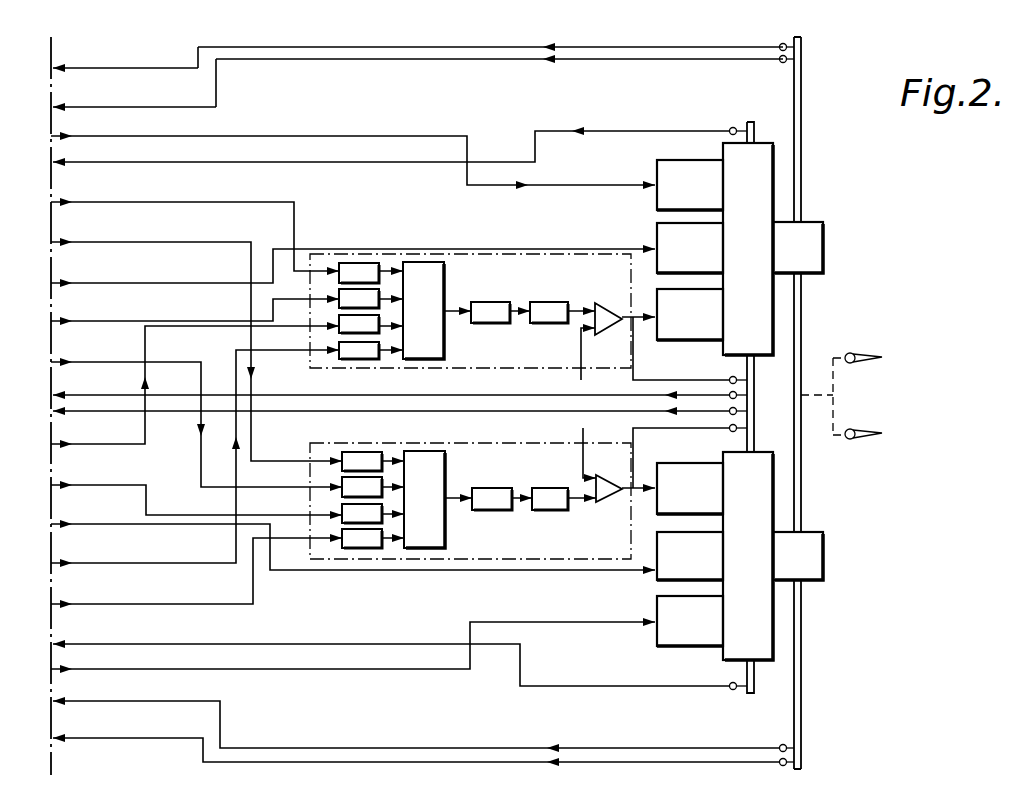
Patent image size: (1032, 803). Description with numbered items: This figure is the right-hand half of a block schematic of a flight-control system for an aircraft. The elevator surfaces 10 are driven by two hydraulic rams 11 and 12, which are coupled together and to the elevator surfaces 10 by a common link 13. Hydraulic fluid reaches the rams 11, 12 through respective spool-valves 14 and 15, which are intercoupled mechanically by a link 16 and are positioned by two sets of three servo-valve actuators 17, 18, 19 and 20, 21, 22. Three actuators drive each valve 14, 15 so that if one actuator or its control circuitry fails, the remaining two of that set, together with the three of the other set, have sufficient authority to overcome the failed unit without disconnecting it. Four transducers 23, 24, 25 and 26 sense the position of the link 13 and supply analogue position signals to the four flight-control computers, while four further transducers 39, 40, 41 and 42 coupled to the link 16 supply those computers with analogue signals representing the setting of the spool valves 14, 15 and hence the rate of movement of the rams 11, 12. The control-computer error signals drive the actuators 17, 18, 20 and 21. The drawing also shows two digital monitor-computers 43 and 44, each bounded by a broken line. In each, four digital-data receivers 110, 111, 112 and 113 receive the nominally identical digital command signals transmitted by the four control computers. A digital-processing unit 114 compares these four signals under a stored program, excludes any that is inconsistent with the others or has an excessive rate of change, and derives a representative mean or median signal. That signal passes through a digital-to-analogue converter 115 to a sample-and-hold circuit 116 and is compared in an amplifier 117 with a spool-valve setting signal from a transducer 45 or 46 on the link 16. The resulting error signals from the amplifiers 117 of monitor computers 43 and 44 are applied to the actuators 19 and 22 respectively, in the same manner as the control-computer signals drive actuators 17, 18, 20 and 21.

The elevator surfaces 10 is at (860, 428).
The hydraulic ram 11 is at (815, 255).
The hydraulic ram 12 is at (815, 565).
The common link 13 is at (805, 510).
The spool-valve 14 is at (763, 203).
The spool-valve 15 is at (760, 641).
The link 16 is at (756, 384).
The servo-valve actuator 17 is at (708, 197).
The servo-valve actuator 18 is at (708, 260).
The servo-valve actuator 19 is at (708, 327).
The servo-valve actuator 20 is at (708, 570).
The servo-valve actuator 21 is at (708, 634).
The servo-valve actuator 22 is at (708, 501).
The transducer 23 is at (787, 70).
The transducer 24 is at (782, 44).
The transducer 25 is at (782, 759).
The transducer 26 is at (784, 745).
The transducer 39 is at (737, 128).
The transducer 40 is at (729, 393).
The transducer 41 is at (727, 413).
The transducer 42 is at (731, 689).
The digital monitor-computer 43 is at (320, 367).
The digital monitor-computer 44 is at (320, 443).
The transducer 45 is at (732, 377).
The transducer 46 is at (733, 431).
The digital-data receiver 110 is at (368, 272).
The digital-data receiver 111 is at (356, 295).
The digital-data receiver 112 is at (356, 330).
The digital-data receiver 113 is at (373, 352).
The digital-processing unit 114 is at (432, 276).
The digital-to-analogue converter 115 is at (508, 285).
The sample-and-hold circuit 116 is at (570, 285).
The amplifier 117 is at (608, 325).